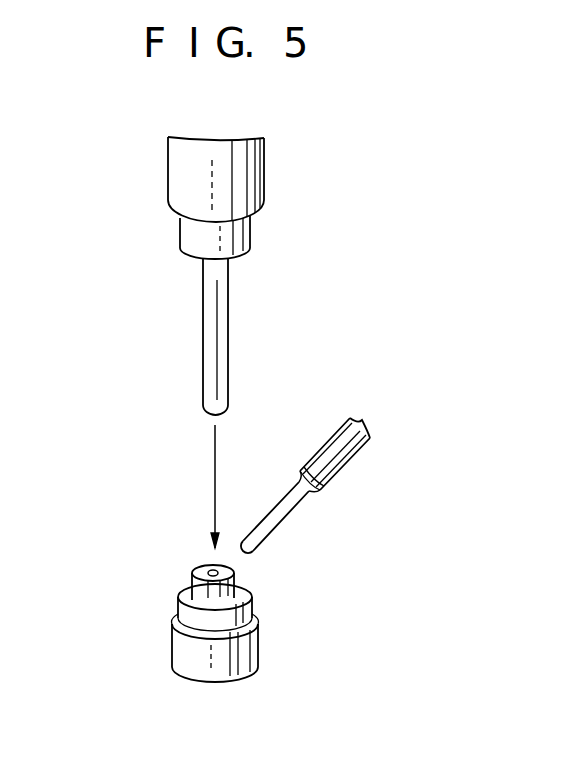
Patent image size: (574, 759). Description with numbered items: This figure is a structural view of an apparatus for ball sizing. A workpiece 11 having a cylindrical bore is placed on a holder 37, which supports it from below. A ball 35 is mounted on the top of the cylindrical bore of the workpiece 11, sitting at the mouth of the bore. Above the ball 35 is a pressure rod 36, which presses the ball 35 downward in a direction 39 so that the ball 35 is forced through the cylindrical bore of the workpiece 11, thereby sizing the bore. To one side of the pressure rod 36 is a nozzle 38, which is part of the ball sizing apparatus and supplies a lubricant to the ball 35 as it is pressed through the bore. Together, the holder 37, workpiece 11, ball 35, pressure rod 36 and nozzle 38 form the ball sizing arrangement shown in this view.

The pressure rod 36 is at (228, 310).
The direction 39 is at (213, 445).
The nozzle 38 is at (283, 523).
The holder 37 is at (178, 640).
The ball 35 is at (194, 566).
The workpiece 11 is at (246, 586).